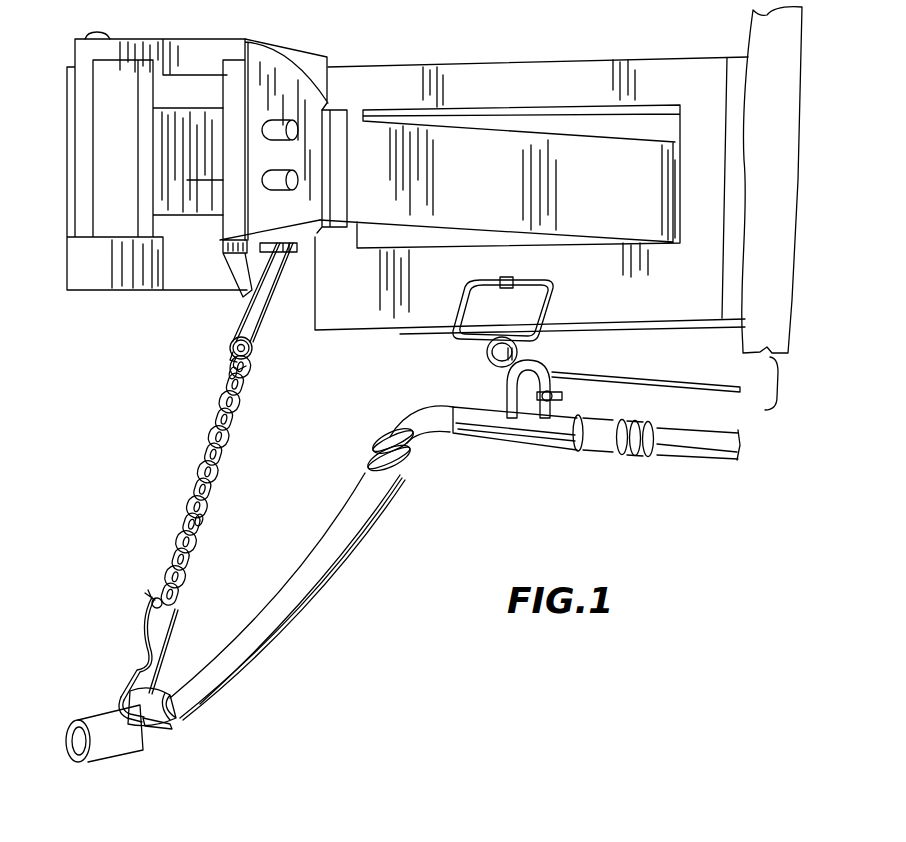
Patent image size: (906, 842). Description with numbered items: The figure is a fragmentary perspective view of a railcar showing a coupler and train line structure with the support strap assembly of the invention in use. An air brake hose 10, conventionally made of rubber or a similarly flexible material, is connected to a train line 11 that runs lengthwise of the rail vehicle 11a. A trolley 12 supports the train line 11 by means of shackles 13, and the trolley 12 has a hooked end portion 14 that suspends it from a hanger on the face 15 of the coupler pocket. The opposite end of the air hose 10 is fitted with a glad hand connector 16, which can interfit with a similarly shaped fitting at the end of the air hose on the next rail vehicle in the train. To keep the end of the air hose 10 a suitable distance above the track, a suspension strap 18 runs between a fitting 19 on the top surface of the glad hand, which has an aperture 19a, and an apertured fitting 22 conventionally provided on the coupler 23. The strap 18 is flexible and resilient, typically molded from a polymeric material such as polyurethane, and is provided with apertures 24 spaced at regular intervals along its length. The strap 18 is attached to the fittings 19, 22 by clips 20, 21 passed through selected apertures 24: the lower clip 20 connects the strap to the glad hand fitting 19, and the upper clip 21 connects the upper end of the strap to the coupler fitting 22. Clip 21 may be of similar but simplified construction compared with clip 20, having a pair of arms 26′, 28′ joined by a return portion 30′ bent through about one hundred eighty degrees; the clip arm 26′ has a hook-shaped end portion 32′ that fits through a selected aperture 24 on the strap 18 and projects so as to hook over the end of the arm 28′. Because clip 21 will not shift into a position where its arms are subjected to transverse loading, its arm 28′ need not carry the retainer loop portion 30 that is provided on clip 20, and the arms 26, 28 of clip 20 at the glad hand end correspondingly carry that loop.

The air brake hose 10 is at (325, 619).
The train line 11 is at (500, 448).
The rail vehicle 11a is at (748, 391).
The trolley 12 is at (700, 380).
The shackles 13 is at (560, 353).
The hooked end portion 14 is at (477, 363).
The face of the coupler pocket 15 is at (377, 320).
The glad hand connector 16 is at (103, 753).
The suspension strap 18 is at (232, 469).
The fitting 19 is at (147, 687).
The aperture 19a is at (147, 722).
The clip 20 is at (120, 640).
The clip 21 is at (216, 327).
The apertured fitting 22 is at (301, 262).
The coupler 23 is at (120, 307).
The apertures 24 is at (199, 453).
The wire 26 is at (160, 640).
The clip arm 26′ is at (243, 300).
The hook 28 is at (147, 619).
The clip arm 28′ is at (262, 323).
The retainer loop portion 30 is at (119, 697).
The return portion 30′ is at (277, 240).
The hook-shaped end portion 32′ is at (227, 348).